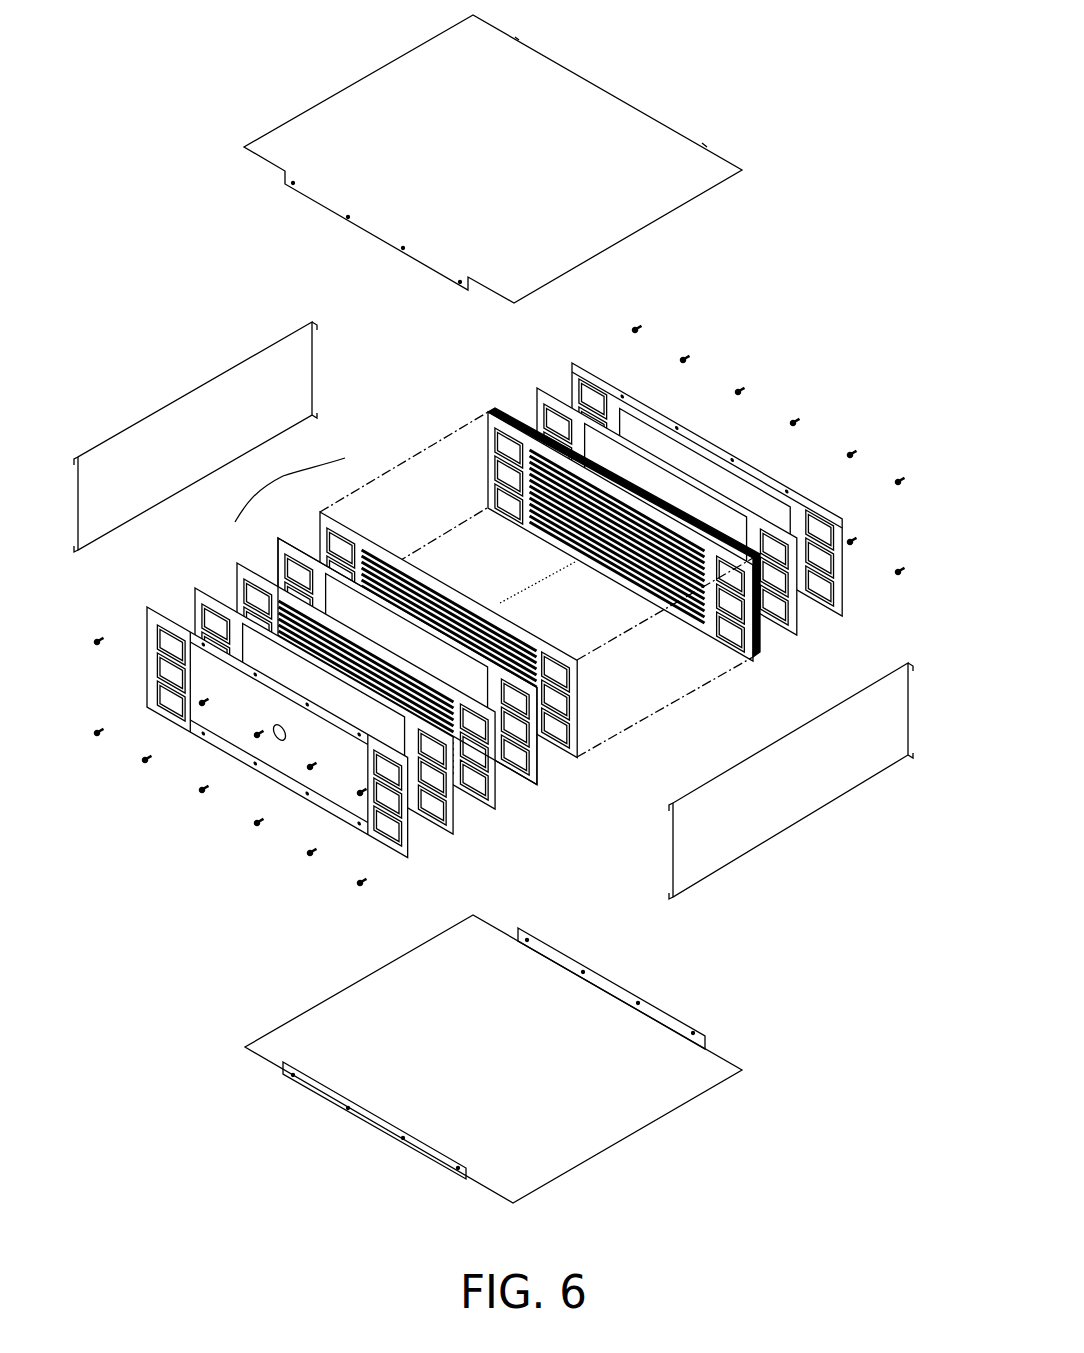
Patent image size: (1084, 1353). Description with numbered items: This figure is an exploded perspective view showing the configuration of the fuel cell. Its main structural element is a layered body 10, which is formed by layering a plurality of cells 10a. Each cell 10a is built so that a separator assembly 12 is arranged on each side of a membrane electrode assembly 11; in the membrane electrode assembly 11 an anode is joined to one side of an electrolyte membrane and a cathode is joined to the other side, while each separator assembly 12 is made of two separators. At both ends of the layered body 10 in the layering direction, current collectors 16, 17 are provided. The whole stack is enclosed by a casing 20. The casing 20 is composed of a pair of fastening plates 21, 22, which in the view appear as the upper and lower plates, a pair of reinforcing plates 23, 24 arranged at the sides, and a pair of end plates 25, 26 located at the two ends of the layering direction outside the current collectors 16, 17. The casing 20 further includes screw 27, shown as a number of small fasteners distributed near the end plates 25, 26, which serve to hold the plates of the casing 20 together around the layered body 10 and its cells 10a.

The layered body 10 is at (680, 705).
The cell 10a is at (290, 484).
The membrane electrode assembly 11 is at (279, 536).
The separator assembly 12 is at (321, 511).
The current collector 16 is at (197, 587).
The current collector 17 is at (537, 387).
The casing 20 is at (645, 105).
The fastening plate 21 is at (706, 160).
The fastening plate 22 is at (706, 1060).
The reinforcing plate 23 is at (225, 368).
The reinforcing plate 24 is at (787, 825).
The end plate 25 is at (150, 606).
The end plate 26 is at (573, 362).
The screw 27 is at (740, 390).